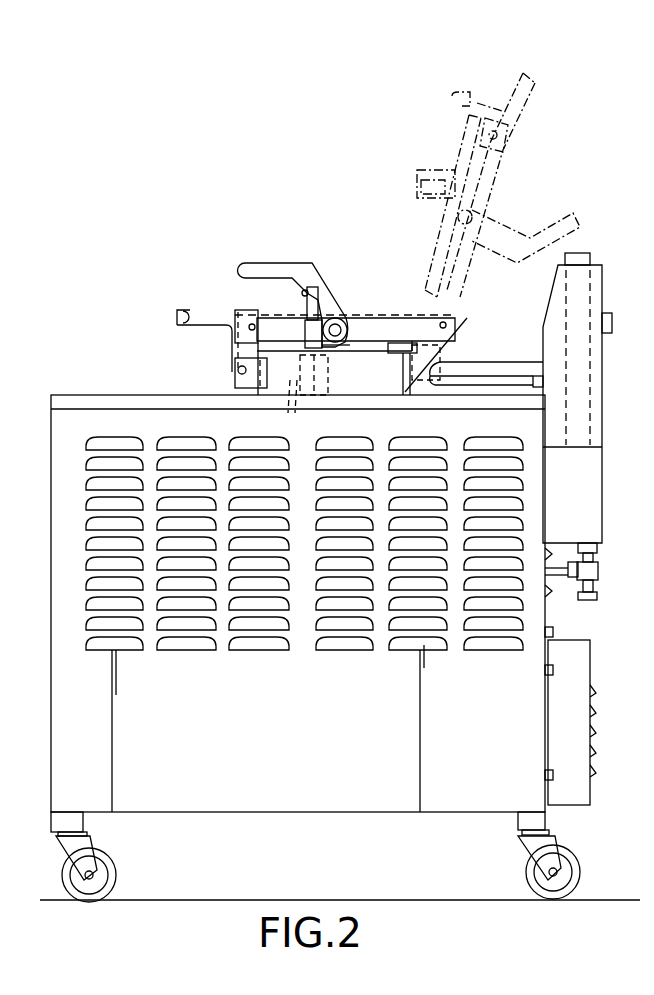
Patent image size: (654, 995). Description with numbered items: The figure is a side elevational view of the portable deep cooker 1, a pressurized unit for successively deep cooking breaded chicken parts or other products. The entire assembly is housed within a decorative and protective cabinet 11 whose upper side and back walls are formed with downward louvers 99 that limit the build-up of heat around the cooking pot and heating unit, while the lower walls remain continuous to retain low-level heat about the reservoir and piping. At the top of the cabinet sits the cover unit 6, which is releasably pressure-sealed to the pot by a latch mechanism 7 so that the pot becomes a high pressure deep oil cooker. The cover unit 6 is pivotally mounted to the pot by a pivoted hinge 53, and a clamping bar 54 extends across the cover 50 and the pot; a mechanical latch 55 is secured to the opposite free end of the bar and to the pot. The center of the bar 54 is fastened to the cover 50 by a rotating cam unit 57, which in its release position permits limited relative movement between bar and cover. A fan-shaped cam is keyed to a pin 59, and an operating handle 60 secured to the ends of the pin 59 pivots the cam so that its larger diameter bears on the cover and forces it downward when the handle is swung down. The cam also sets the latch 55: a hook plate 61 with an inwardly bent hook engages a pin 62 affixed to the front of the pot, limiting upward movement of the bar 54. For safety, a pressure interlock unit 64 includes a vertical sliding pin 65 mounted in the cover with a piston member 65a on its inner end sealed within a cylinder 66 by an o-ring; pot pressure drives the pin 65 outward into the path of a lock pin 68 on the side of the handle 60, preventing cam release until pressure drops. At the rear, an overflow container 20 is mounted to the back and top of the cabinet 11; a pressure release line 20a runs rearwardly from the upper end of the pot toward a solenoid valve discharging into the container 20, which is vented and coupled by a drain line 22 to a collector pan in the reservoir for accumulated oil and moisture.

The portable deep cooker 1 is at (94, 352).
The cover unit 6 is at (208, 284).
The latch mechanism 7 is at (170, 325).
The cabinet 11 is at (315, 704).
The overflow container 20 is at (592, 478).
The pressure release line 20a is at (519, 369).
The drain line 22 is at (557, 572).
The cover 50 is at (393, 344).
The pivoted hinge 53 is at (456, 340).
The clamping bar 54 is at (372, 313).
The mechanical latch 55 is at (222, 341).
The rotating cam unit 57 is at (340, 350).
The pin 59 is at (337, 318).
The operating handle 60 is at (275, 270).
The hook plate 61 is at (238, 371).
The pin 62 is at (238, 374).
The pressure interlock unit 64 is at (306, 325).
The vertical sliding pin 65 is at (313, 328).
The piston member 65a is at (313, 396).
The cylinder 66 is at (288, 400).
The lock pin 68 is at (302, 287).
The louvers 99 is at (513, 537).